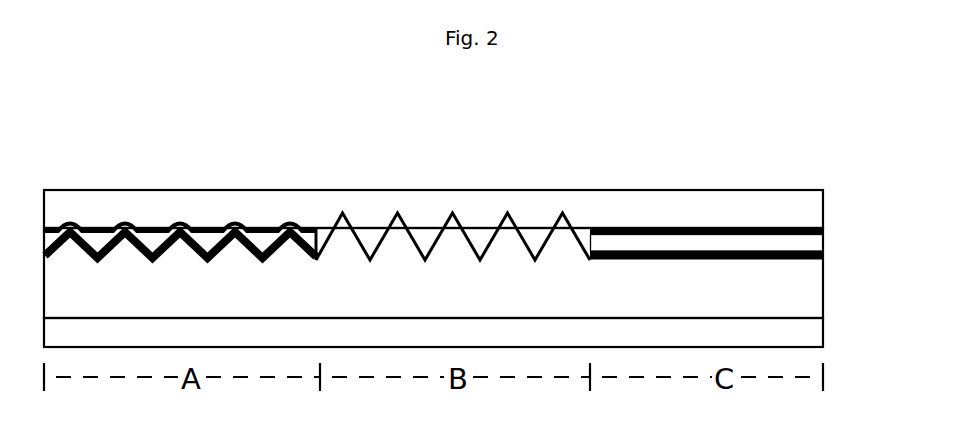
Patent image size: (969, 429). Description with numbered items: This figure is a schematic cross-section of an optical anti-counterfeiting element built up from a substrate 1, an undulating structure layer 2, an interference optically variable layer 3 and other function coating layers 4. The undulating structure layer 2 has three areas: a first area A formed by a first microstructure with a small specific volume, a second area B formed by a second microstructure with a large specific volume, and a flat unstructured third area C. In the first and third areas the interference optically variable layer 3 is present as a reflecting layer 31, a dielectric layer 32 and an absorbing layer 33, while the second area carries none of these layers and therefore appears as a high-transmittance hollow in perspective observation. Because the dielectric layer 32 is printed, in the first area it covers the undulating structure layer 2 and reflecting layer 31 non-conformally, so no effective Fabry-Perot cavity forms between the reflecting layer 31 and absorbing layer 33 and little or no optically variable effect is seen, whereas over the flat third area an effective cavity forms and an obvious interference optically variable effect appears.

The substrate 1 is at (812, 332).
The undulating structure layer 2 is at (812, 284).
The interference optically variable layer 3 is at (476, 240).
The reflecting layer 31 is at (812, 258).
The dielectric layer 32 is at (812, 243).
The absorbing layer 33 is at (812, 231).
The other function coating layers 4 is at (812, 200).